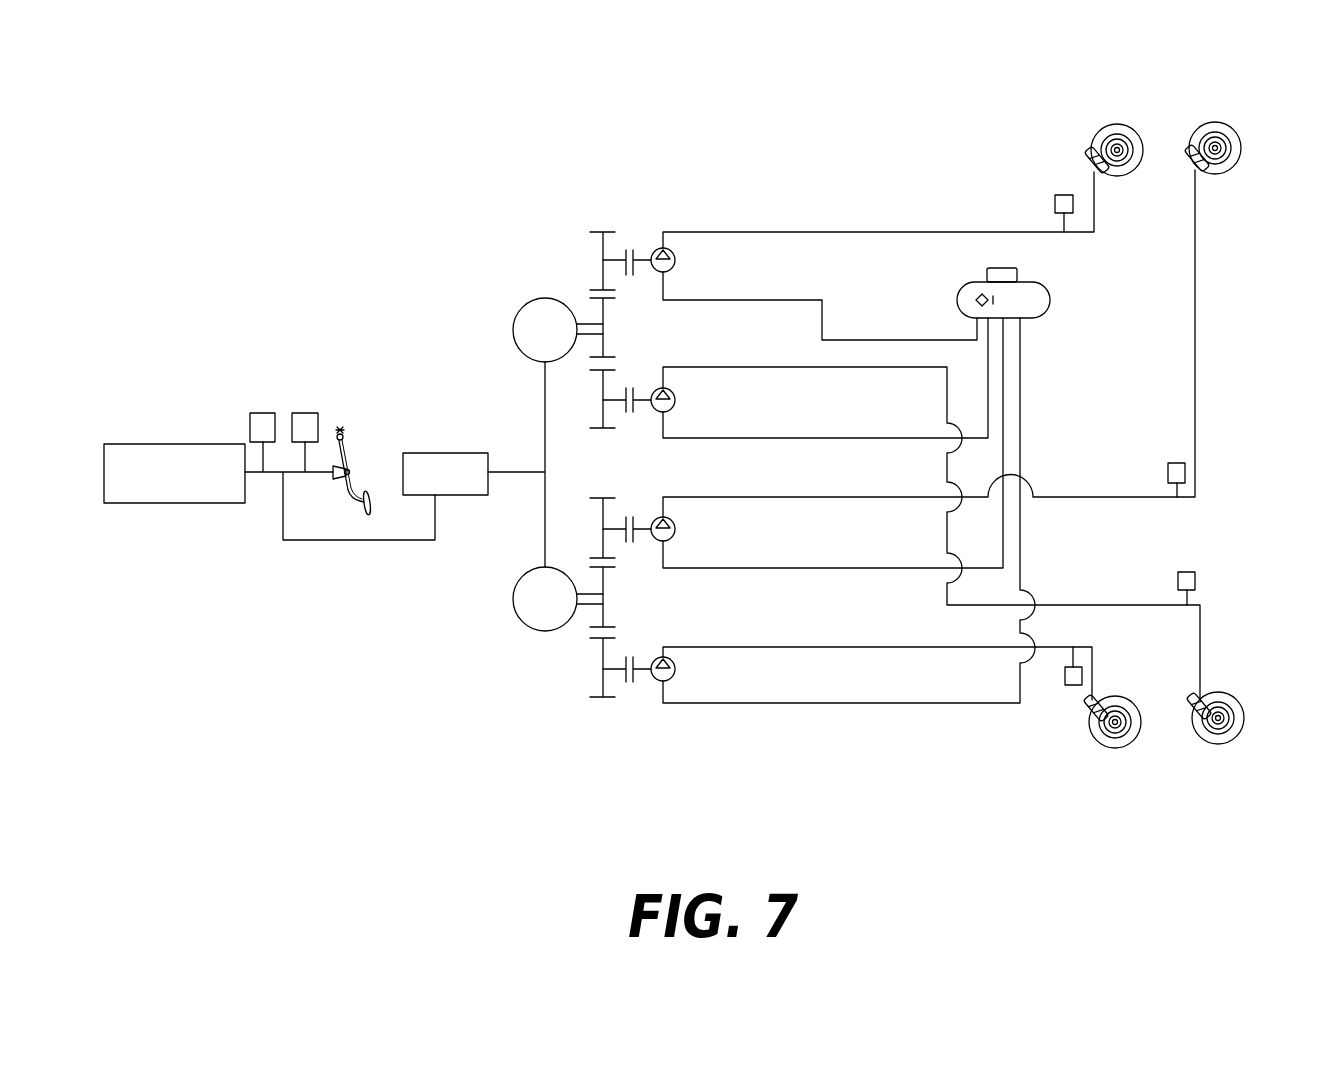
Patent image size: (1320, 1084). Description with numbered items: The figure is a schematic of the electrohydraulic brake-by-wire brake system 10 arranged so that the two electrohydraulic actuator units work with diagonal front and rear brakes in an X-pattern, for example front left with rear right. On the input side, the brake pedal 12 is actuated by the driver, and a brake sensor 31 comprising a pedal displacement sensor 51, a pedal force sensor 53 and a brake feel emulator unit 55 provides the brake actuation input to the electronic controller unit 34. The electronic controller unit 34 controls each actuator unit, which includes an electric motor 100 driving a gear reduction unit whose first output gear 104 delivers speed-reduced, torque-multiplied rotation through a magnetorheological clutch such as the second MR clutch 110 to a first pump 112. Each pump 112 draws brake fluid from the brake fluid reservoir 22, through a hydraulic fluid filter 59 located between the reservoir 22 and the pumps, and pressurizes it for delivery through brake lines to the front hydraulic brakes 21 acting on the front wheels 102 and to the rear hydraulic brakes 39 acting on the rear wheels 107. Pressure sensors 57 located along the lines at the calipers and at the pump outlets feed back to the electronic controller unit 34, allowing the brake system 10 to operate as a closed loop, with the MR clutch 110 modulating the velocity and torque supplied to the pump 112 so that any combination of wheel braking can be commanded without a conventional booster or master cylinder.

The brake system 10 is at (237, 158).
The brake pedal 12 is at (343, 430).
The front hydraulic brakes 21 is at (1104, 176).
The brake fluid reservoir 22 is at (1040, 296).
The brake sensor 31 is at (190, 422).
The electronic controller unit 34 is at (452, 453).
The rear hydraulic brakes 39 is at (1215, 172).
The pedal displacement sensor 51 is at (305, 413).
The pedal force sensor 53 is at (255, 413).
The brake feel emulator unit 55 is at (155, 443).
The pressure sensors 57 is at (1057, 200).
The hydraulic fluid filter 59 is at (980, 298).
The electric motor 100 is at (513, 325).
The front wheels 102 is at (1092, 150).
The first output gear 104 is at (590, 298).
The rear wheels 107 is at (1228, 130).
The second MR clutch 110 is at (627, 250).
The first pump 112 is at (677, 263).